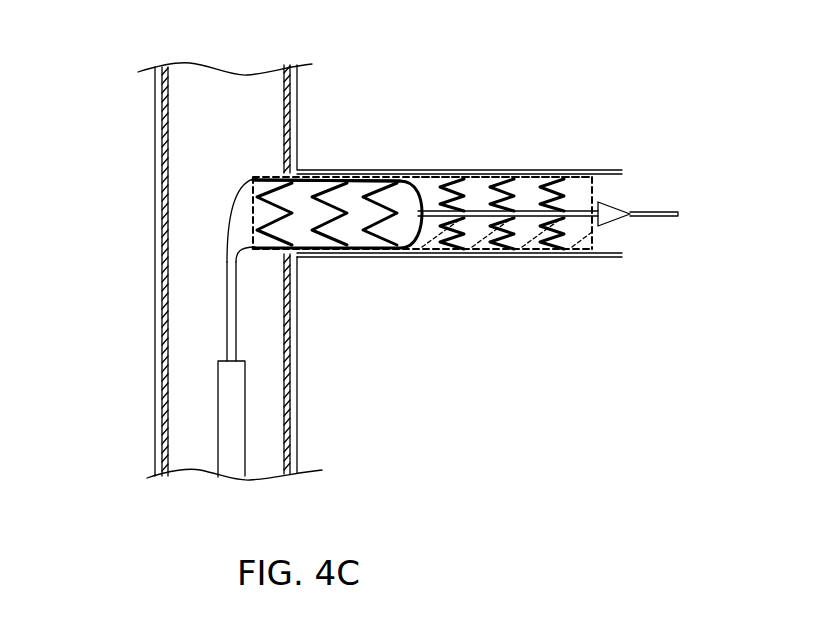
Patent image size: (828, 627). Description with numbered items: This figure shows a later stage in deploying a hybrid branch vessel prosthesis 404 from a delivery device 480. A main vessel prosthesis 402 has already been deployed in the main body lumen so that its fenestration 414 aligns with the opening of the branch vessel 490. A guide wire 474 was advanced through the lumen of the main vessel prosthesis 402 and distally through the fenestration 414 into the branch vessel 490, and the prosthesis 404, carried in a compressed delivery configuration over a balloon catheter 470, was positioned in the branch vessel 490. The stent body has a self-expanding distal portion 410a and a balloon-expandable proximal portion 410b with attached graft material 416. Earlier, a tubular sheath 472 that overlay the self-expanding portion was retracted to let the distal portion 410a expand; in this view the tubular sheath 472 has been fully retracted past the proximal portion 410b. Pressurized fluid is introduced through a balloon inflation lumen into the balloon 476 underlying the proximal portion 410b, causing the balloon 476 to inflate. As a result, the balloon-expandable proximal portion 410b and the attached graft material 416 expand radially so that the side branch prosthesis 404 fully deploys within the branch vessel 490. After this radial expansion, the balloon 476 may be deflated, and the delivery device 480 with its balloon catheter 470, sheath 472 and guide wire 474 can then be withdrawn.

The main vessel prosthesis 402 is at (162, 122).
The hybrid branch vessel prosthesis 404 is at (507, 127).
The fenestration 414 is at (287, 160).
The graft material 416 is at (543, 175).
The balloon catheter 470 is at (593, 208).
The guide wire 474 is at (668, 217).
The balloon 476 is at (405, 173).
The branch vessel 490 is at (603, 258).
The self-expanding distal portion 410a is at (472, 254).
The balloon-expandable proximal portion 410b is at (337, 254).
The tubular sheath 472 is at (245, 400).
The delivery device 480 is at (257, 450).